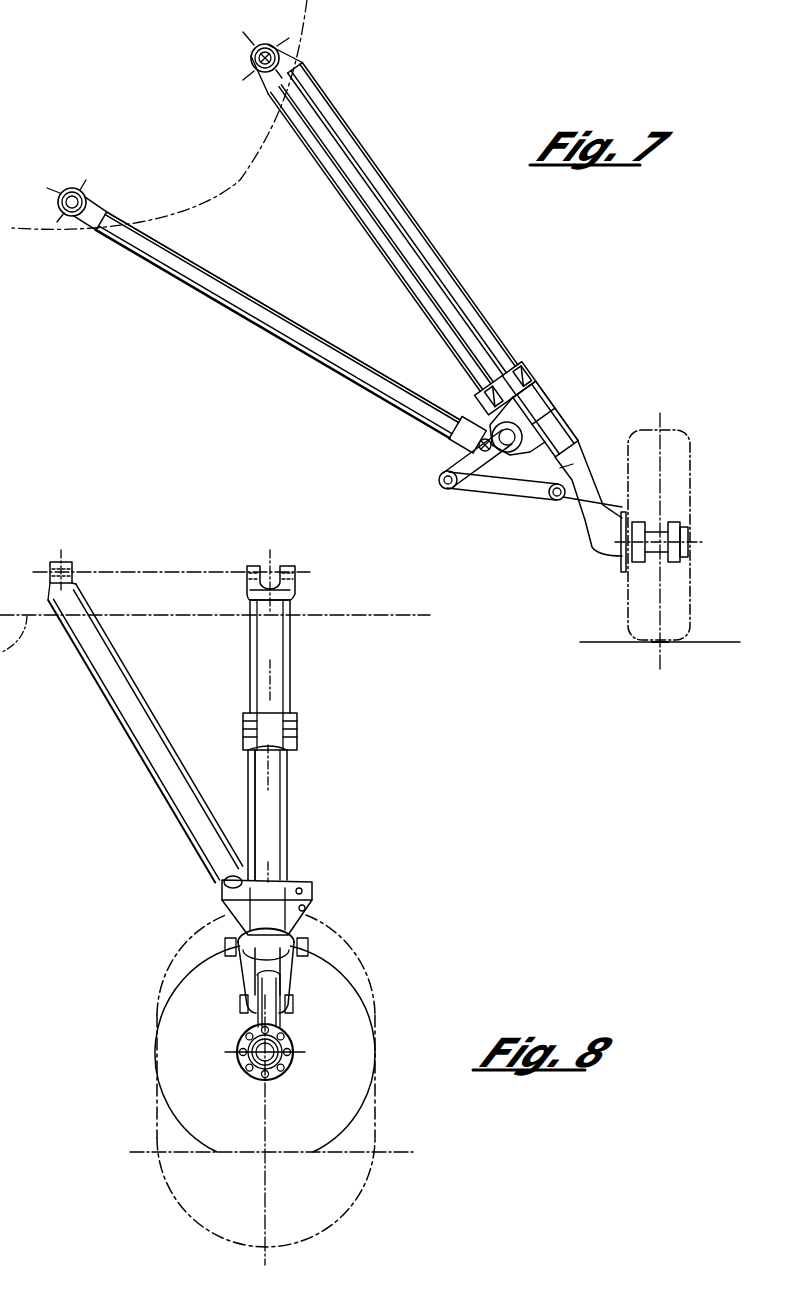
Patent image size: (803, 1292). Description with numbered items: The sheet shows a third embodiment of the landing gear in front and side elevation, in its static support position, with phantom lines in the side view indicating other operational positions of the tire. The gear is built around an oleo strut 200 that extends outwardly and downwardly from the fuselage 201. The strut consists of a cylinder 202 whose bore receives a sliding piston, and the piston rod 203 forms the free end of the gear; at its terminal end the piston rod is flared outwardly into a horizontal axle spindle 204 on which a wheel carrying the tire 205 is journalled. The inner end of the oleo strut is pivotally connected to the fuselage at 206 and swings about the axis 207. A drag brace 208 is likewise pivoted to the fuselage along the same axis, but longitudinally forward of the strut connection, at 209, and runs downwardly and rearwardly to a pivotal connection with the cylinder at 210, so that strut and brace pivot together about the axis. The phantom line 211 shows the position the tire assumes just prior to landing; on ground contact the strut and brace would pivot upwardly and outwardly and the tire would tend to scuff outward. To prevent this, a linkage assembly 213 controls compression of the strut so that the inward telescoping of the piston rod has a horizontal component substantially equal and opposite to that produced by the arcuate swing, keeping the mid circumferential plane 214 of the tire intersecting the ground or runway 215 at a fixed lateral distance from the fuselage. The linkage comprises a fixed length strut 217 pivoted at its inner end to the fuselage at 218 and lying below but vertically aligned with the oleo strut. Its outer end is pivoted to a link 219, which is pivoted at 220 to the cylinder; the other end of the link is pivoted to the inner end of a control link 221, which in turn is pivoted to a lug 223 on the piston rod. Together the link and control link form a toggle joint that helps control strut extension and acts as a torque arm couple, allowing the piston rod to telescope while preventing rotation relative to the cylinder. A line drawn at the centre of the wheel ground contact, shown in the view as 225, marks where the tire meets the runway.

In FIG. 7, the oleo strut 200 is at (582, 375).
In FIG. 8, the oleo strut 200 is at (296, 662).
In FIG. 7, the fuselage 201 is at (310, 31).
In FIG. 7, the cylinder 202 is at (402, 201).
In FIG. 8, the cylinder 202 is at (290, 690).
In FIG. 7, the piston rod 203 is at (598, 544).
In FIG. 8, the piston rod 203 is at (274, 1015).
In FIG. 7, the axle spindle 204 is at (676, 557).
In FIG. 7, the tire 205 is at (692, 487).
In FIG. 8, the tire 205 is at (378, 1056).
In FIG. 8, the pivotal connection of oleo strut 206 is at (272, 570).
In FIG. 8, the axis 207 is at (305, 576).
In FIG. 7, the drag brace 208 is at (353, 174).
In FIG. 8, the drag brace 208 is at (140, 728).
In FIG. 7, the drag brace pivotal connection 209 is at (251, 57).
In FIG. 8, the drag brace pivotal connection 209 is at (70, 563).
In FIG. 7, the pivotal connection of drag brace to cylinder 210 is at (527, 378).
In FIG. 8, the pivotal connection of drag brace to cylinder 210 is at (227, 897).
In FIG. 8, the phantom line 211 is at (343, 1213).
In FIG. 7, the linkage assembly 213 is at (366, 408).
In FIG. 7, the mid circumferential plane 214 is at (664, 414).
In FIG. 7, the ground or runway 215 is at (607, 645).
In FIG. 7, the fixed length strut 217 is at (207, 296).
In FIG. 8, the fixed length strut 217 is at (274, 820).
In FIG. 7, the pivotal connection of fixed length strut 218 is at (74, 190).
In FIG. 7, the link 219 is at (460, 466).
In FIG. 7, the pivotal connection of link to cylinder 220 is at (522, 437).
In FIG. 7, the control link 221 is at (482, 491).
In FIG. 7, the lug 223 is at (570, 505).
In FIG. 7, the ground contact point 225 is at (660, 644).